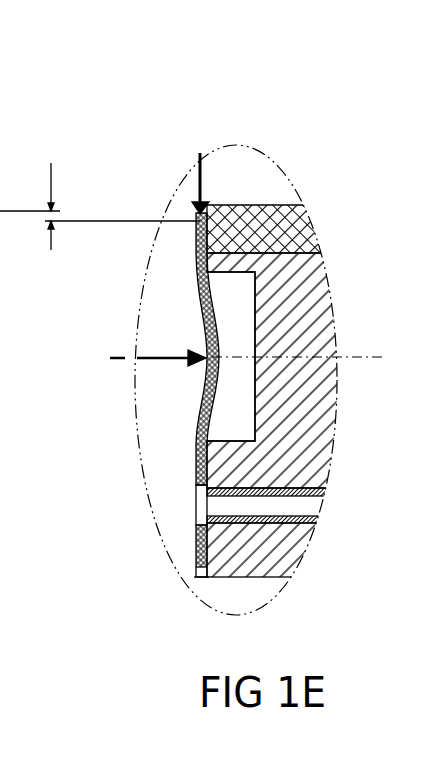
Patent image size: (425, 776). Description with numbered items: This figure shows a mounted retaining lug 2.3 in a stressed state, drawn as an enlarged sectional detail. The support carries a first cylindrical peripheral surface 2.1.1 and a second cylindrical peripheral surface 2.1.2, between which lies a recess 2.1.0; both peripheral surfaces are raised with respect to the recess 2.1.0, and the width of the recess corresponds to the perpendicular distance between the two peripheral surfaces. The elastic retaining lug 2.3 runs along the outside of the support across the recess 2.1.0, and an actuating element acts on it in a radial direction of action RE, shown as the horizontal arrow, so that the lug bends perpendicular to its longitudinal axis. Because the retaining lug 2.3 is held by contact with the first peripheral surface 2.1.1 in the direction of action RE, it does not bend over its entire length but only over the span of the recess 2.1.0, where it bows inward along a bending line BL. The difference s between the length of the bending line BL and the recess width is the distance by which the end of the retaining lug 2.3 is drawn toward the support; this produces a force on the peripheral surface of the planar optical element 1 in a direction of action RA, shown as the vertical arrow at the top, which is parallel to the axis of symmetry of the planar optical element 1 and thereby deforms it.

The planar optical element 1 is at (262, 207).
The first cylindrical peripheral surface 2.1.1 is at (231, 206).
The recess 2.1.0 is at (233, 418).
The second cylindrical peripheral surface 2.1.2 is at (196, 458).
The retaining lug 2.3 is at (197, 400).
The bending line BL is at (205, 322).
The direction of action RA is at (200, 178).
The direction of action RE is at (157, 363).
The difference s is at (100, 205).